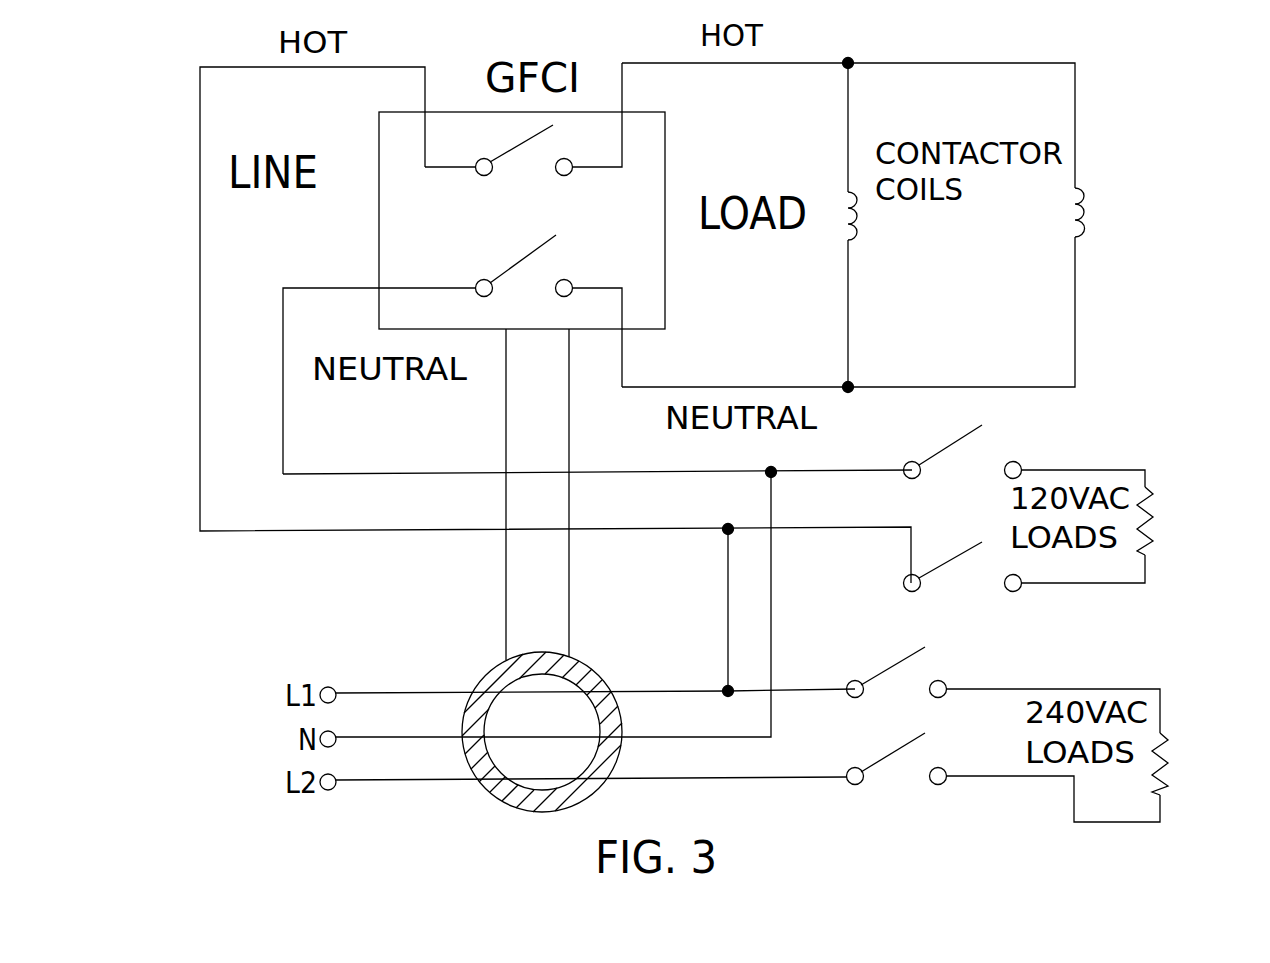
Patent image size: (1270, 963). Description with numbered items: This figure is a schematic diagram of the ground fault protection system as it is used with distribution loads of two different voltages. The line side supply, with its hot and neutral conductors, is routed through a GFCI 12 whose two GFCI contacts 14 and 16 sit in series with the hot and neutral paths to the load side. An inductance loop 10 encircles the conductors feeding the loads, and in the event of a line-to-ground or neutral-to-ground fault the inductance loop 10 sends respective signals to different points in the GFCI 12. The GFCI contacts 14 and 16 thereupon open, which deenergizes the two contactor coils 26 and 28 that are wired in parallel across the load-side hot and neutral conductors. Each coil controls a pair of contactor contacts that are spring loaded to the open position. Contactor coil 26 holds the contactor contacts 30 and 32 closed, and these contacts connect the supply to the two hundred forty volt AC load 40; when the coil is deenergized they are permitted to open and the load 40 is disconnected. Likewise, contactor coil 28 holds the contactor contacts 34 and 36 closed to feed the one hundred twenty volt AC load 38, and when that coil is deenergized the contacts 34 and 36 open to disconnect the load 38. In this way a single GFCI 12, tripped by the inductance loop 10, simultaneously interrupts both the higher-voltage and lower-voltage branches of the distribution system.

The inductance loop 10 is at (583, 657).
The GFCI 12 is at (413, 185).
The GFCI contact 14 is at (518, 150).
The GFCI contact 16 is at (522, 258).
The contactor coil 26 is at (851, 240).
The contactor coil 28 is at (1077, 237).
The contactor contact 30 is at (910, 652).
The contactor contact 32 is at (903, 742).
The contactor contact 34 is at (975, 427).
The contactor contact 36 is at (968, 546).
The 120 volt AC load 38 is at (1152, 500).
The 240 volt AC load 40 is at (1168, 745).